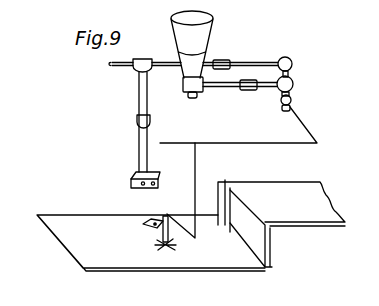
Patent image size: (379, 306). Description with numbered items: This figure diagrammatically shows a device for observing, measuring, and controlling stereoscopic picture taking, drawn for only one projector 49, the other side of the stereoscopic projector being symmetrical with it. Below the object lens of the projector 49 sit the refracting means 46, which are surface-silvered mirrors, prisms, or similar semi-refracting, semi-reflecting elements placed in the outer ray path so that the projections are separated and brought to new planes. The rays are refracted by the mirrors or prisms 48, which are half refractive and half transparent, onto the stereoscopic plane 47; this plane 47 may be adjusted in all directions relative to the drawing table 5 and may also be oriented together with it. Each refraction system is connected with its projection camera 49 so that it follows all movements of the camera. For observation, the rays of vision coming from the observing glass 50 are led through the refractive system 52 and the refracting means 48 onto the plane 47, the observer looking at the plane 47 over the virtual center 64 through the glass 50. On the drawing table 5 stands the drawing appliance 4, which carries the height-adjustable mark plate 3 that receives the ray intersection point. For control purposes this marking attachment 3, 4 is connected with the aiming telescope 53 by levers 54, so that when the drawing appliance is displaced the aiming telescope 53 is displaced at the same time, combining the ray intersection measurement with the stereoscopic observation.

The mark plate 3 is at (144, 224).
The drawing appliance 4 is at (160, 237).
The drawing table 5 is at (63, 224).
The refracting means 46 is at (191, 93).
The stereoscopic plane 47 is at (307, 220).
The refracting mirror or prism 48 is at (293, 88).
The projector 49 is at (200, 44).
The double glass 50 is at (128, 178).
The refractive system 52 is at (163, 62).
The aiming telescope 53 is at (282, 108).
The levers 54 is at (197, 163).
The virtual center 64 is at (292, 63).